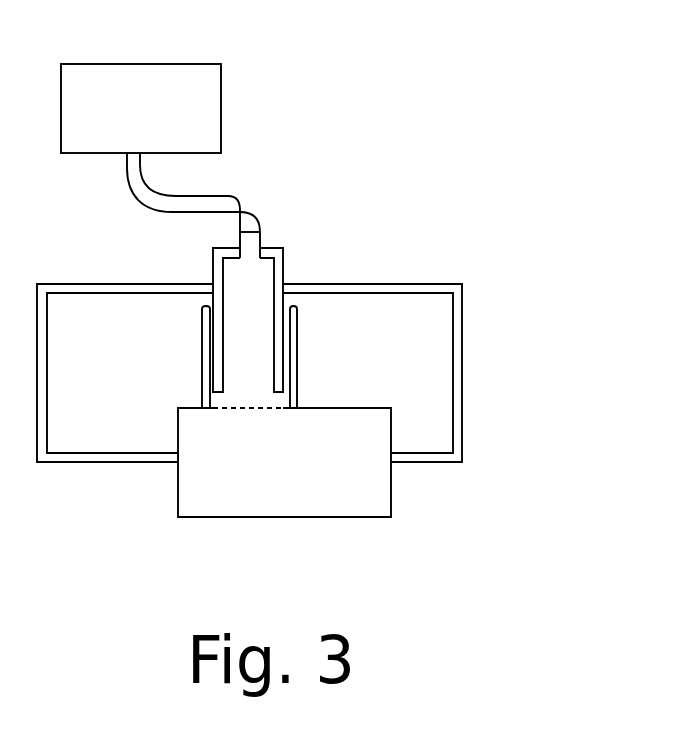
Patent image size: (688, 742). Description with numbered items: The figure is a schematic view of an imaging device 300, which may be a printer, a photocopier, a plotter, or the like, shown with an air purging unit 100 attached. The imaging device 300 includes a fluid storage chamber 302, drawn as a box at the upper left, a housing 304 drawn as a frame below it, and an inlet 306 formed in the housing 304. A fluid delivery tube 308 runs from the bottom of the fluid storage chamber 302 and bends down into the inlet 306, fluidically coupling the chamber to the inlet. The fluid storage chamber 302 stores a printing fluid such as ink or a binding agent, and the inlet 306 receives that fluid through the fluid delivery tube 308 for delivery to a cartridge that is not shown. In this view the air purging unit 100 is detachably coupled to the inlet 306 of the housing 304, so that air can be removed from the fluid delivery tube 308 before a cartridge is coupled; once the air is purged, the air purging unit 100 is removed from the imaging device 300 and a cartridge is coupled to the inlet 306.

The imaging device 300 is at (392, 110).
The fluid storage chamber 302 is at (122, 122).
The housing 304 is at (410, 285).
The inlet 306 is at (250, 285).
The fluid delivery tube 308 is at (220, 196).
The air purging unit 100 is at (265, 474).